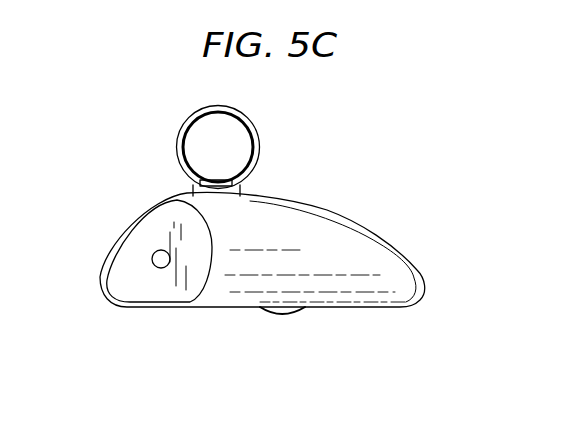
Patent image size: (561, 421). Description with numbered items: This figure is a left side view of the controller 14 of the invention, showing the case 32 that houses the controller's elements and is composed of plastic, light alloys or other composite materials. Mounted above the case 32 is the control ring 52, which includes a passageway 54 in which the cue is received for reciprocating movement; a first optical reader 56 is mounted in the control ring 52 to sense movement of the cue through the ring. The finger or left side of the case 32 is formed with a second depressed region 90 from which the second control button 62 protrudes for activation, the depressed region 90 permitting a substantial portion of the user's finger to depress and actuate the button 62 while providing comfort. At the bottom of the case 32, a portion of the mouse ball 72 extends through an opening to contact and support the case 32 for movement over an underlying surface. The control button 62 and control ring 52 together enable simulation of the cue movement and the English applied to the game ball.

The controller 14 is at (400, 239).
The case 32 is at (323, 212).
The control ring 52 is at (190, 120).
The passageway 54 is at (232, 135).
The first optical reader 56 is at (213, 181).
The second control button 62 is at (158, 268).
The mouse ball 72 is at (288, 316).
The second depressed region 90 is at (150, 233).